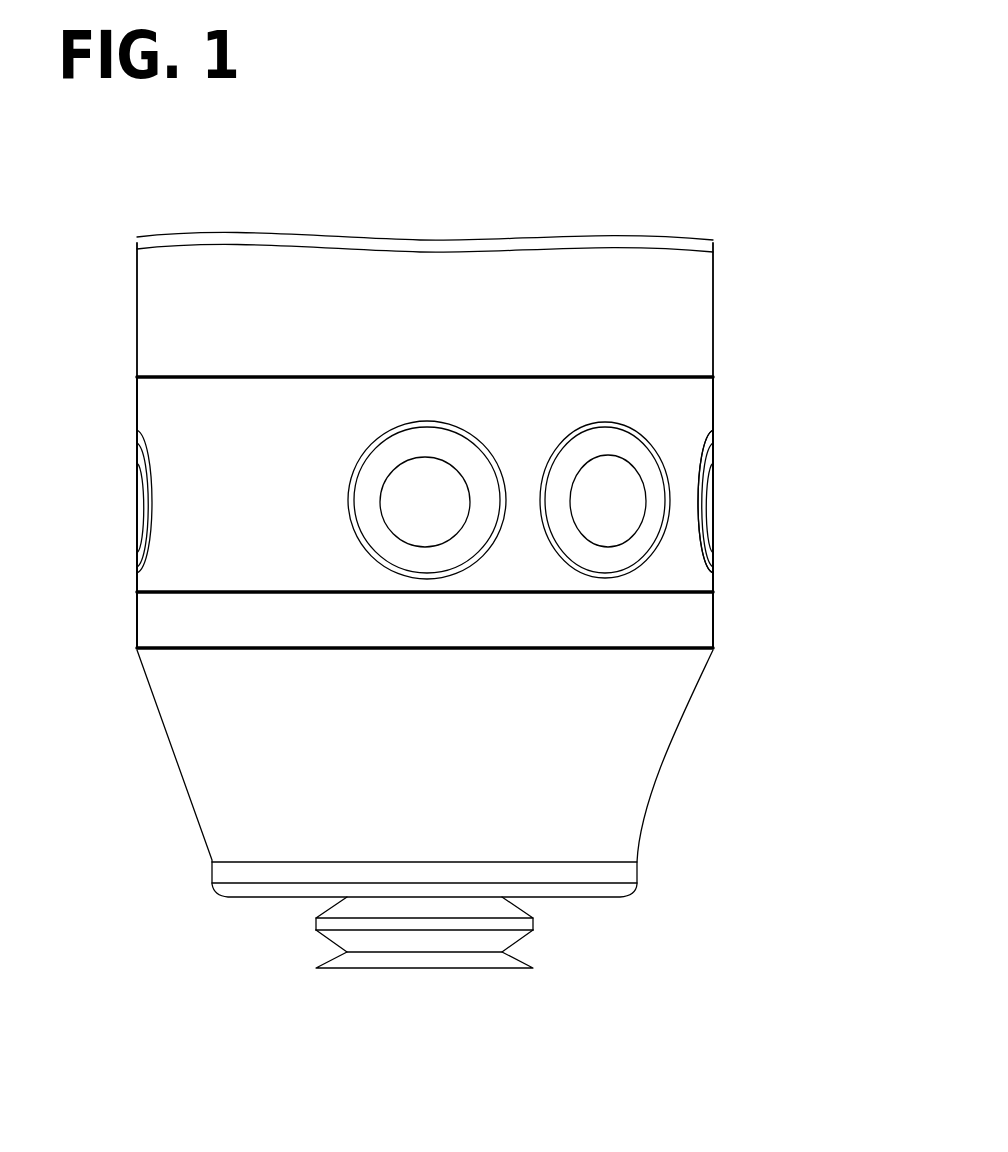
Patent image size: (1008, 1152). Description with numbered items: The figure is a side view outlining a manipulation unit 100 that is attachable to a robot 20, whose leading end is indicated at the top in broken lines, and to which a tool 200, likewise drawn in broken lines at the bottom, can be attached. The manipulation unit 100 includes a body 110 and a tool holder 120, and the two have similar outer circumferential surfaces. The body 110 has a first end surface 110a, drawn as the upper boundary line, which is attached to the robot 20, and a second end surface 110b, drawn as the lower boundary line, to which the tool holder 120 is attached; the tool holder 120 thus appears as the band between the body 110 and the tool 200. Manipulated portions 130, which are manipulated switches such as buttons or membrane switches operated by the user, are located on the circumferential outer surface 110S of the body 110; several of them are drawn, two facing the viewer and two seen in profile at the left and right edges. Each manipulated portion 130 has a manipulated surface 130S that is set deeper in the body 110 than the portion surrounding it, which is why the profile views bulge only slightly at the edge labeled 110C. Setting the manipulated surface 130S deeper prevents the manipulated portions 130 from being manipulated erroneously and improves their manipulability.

The robot 20 is at (682, 292).
The manipulation unit 100 is at (735, 403).
The body 110 is at (452, 393).
The first end surface 110a is at (281, 376).
The second end surface 110b is at (295, 595).
The circumferential outer surface 110S is at (185, 415).
The corner of body 110C is at (713, 548).
The tool holder 120 is at (448, 623).
The manipulated portion 130 is at (440, 468).
The manipulated surface 130S is at (713, 462).
The tool 200 is at (640, 745).